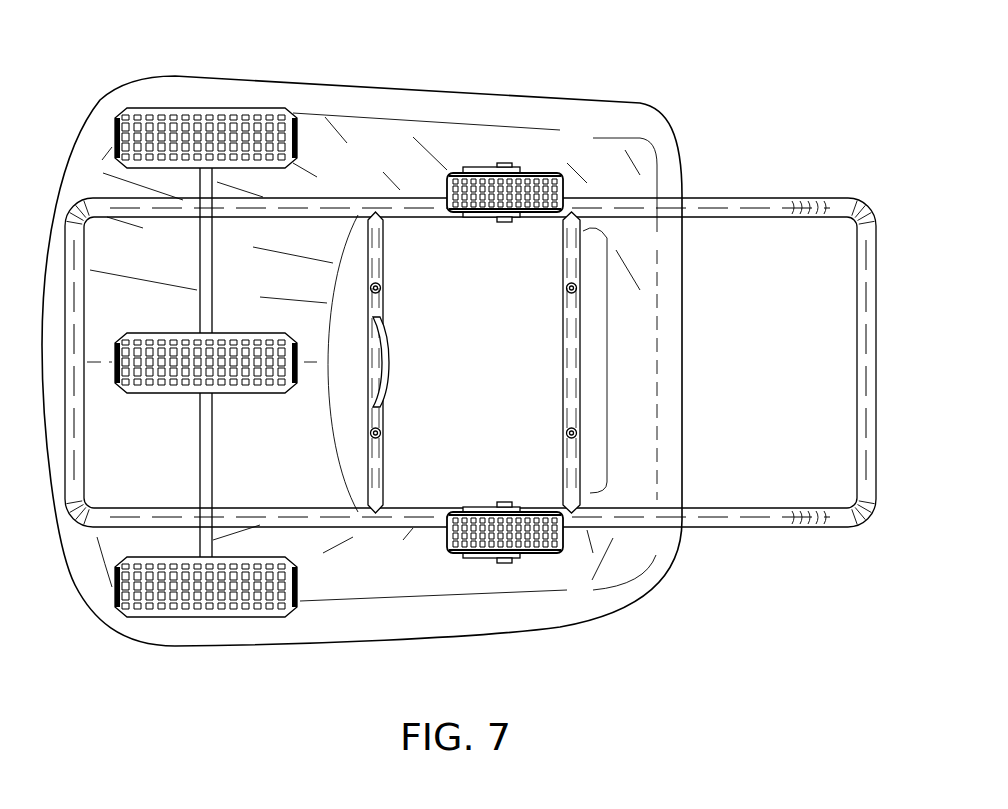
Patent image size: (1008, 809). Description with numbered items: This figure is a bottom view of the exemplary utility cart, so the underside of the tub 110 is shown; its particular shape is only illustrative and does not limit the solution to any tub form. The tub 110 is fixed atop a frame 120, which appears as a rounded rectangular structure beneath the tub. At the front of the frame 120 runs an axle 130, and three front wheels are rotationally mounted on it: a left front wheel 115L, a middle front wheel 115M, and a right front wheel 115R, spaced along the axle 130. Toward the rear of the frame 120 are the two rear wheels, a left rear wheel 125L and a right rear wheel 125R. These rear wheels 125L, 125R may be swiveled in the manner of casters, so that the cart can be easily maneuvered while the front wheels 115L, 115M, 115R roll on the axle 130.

The tub aspect 110 is at (496, 316).
The frame 120 is at (710, 198).
The axle 130 is at (235, 275).
The left front wheel 115L is at (202, 108).
The middle front wheel 115M is at (190, 393).
The right front wheel 115R is at (138, 618).
The left rear wheel 125L is at (545, 173).
The right rear wheel 125R is at (548, 553).